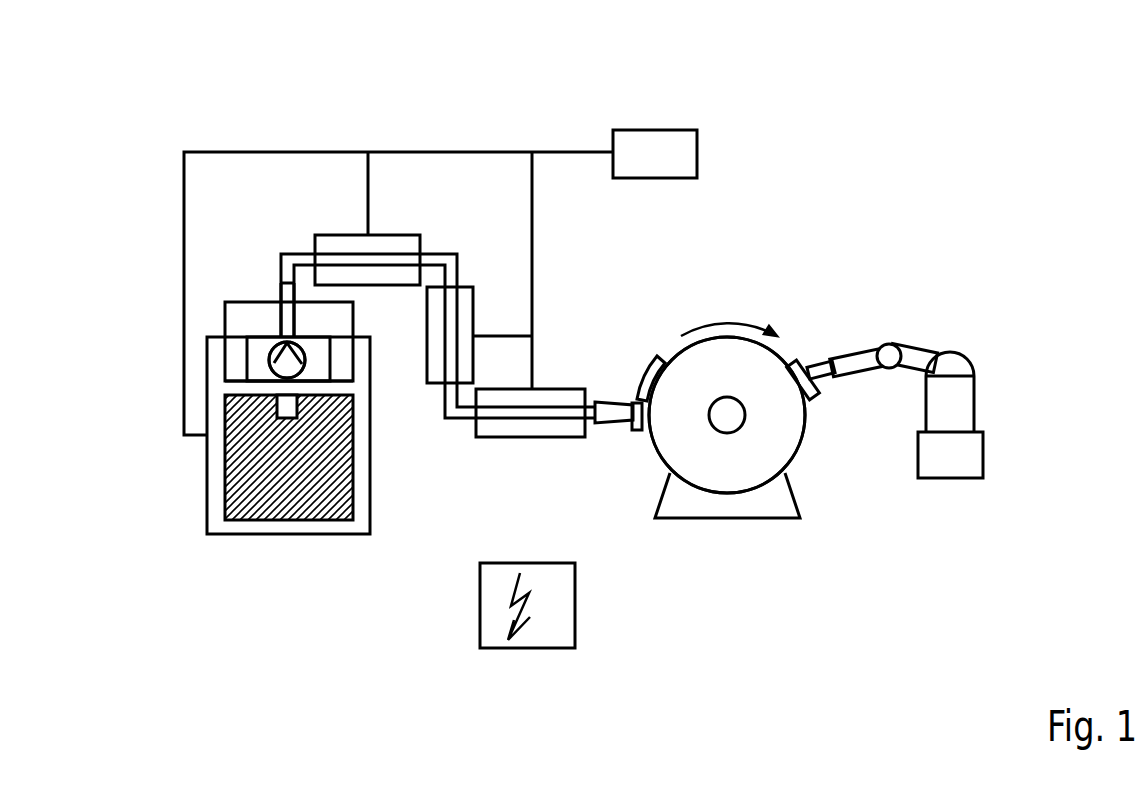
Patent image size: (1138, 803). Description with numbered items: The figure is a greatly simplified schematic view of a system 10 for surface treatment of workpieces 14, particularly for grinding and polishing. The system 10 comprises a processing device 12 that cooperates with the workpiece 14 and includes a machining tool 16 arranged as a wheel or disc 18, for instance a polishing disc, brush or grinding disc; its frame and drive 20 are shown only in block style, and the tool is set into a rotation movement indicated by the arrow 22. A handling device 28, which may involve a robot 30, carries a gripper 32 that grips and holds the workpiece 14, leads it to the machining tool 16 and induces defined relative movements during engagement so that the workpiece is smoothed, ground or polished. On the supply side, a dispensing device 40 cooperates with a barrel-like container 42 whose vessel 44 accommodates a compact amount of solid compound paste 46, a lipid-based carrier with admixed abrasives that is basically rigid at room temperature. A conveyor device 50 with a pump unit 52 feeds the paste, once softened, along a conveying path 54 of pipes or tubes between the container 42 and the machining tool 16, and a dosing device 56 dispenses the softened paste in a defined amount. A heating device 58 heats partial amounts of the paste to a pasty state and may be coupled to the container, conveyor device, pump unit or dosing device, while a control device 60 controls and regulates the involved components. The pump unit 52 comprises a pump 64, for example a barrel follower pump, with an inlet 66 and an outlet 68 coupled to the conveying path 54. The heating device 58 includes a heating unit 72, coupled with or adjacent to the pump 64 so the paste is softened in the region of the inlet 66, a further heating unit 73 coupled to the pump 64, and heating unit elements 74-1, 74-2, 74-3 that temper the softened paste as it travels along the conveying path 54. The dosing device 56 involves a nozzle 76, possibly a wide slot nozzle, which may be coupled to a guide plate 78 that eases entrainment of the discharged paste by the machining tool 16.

The system 10 is at (823, 222).
The processing device 12 is at (742, 327).
The workpiece 14 is at (806, 360).
The machining tool 16 is at (694, 476).
The wheel or disc 18 is at (780, 453).
The frame and drive 20 is at (772, 507).
The rotation movement arrow 22 is at (712, 320).
The handling device 28 is at (942, 364).
The robot 30 is at (965, 407).
The gripper 32 is at (823, 373).
The dispensing device 40 is at (242, 575).
The container 42 is at (242, 297).
The vessel 44 is at (225, 317).
The solid compound paste 46 is at (312, 467).
The conveyor device 50 is at (439, 250).
The pump unit 52 is at (246, 354).
The conveying path 54 is at (428, 254).
The dosing device 56 is at (605, 417).
The heating device 58 is at (676, 127).
The control device 60 is at (480, 613).
The pump 64 is at (283, 367).
The inlet 66 is at (290, 408).
The outlet 68 is at (276, 293).
The heating unit 72 is at (213, 460).
The heating unit 73 is at (313, 392).
The heating unit element 74-1 is at (348, 243).
The heating unit element 74-2 is at (473, 312).
The heating unit element 74-3 is at (557, 389).
The nozzle 76 is at (622, 443).
The guide plate 78 is at (650, 358).